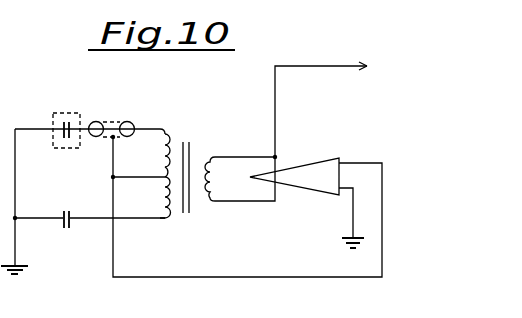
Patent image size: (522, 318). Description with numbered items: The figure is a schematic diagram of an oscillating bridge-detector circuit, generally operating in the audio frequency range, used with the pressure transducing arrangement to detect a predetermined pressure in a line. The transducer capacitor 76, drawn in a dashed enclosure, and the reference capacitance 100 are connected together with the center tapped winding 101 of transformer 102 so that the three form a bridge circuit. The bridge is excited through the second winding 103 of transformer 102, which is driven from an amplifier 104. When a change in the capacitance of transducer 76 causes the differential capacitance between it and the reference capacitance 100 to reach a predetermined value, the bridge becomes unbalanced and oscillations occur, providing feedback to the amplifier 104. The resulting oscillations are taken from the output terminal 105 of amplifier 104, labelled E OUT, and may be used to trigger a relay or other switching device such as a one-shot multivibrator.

The transducer capacitor 76 is at (66, 111).
The reference capacitance 100 is at (65, 209).
The center tapped winding 101 is at (177, 137).
The transformer 102 is at (192, 141).
The winding 103 is at (207, 191).
The amplifier 104 is at (314, 158).
The output terminal 105 is at (275, 157).